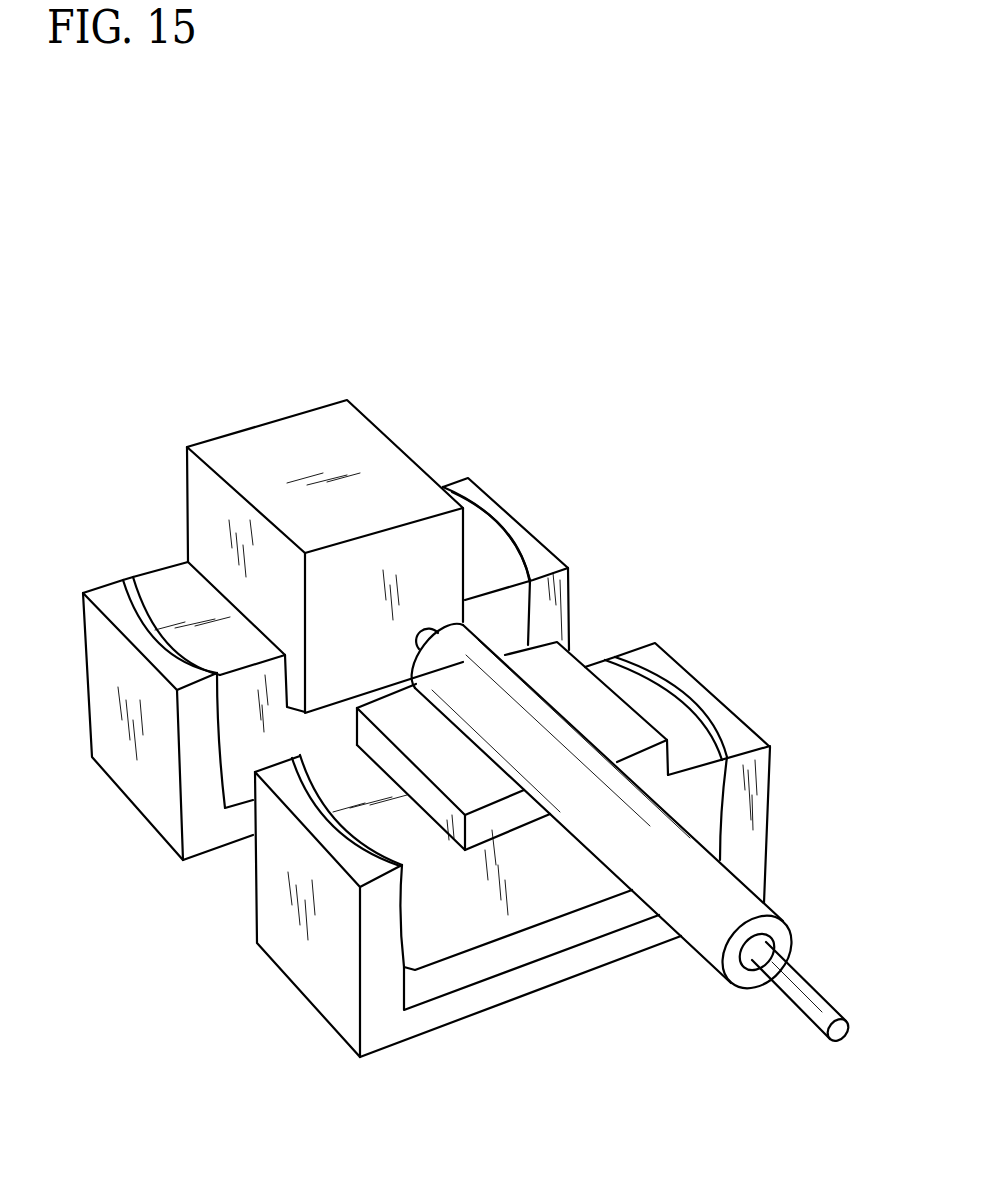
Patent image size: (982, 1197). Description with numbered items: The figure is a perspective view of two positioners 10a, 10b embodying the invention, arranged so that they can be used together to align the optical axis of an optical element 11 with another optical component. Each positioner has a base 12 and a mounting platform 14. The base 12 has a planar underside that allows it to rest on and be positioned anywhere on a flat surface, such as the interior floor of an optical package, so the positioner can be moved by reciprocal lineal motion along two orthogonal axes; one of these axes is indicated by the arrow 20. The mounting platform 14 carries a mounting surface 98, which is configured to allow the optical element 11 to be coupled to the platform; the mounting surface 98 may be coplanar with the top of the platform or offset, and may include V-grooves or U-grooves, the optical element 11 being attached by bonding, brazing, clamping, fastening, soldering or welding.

The positioner 10a is at (531, 526).
The positioner 10b is at (707, 688).
The optical element 11 is at (387, 433).
The base 12 is at (142, 812).
The mounting platform 14 is at (352, 792).
The mounting surface 98 is at (575, 652).
The arrow 20 is at (773, 912).